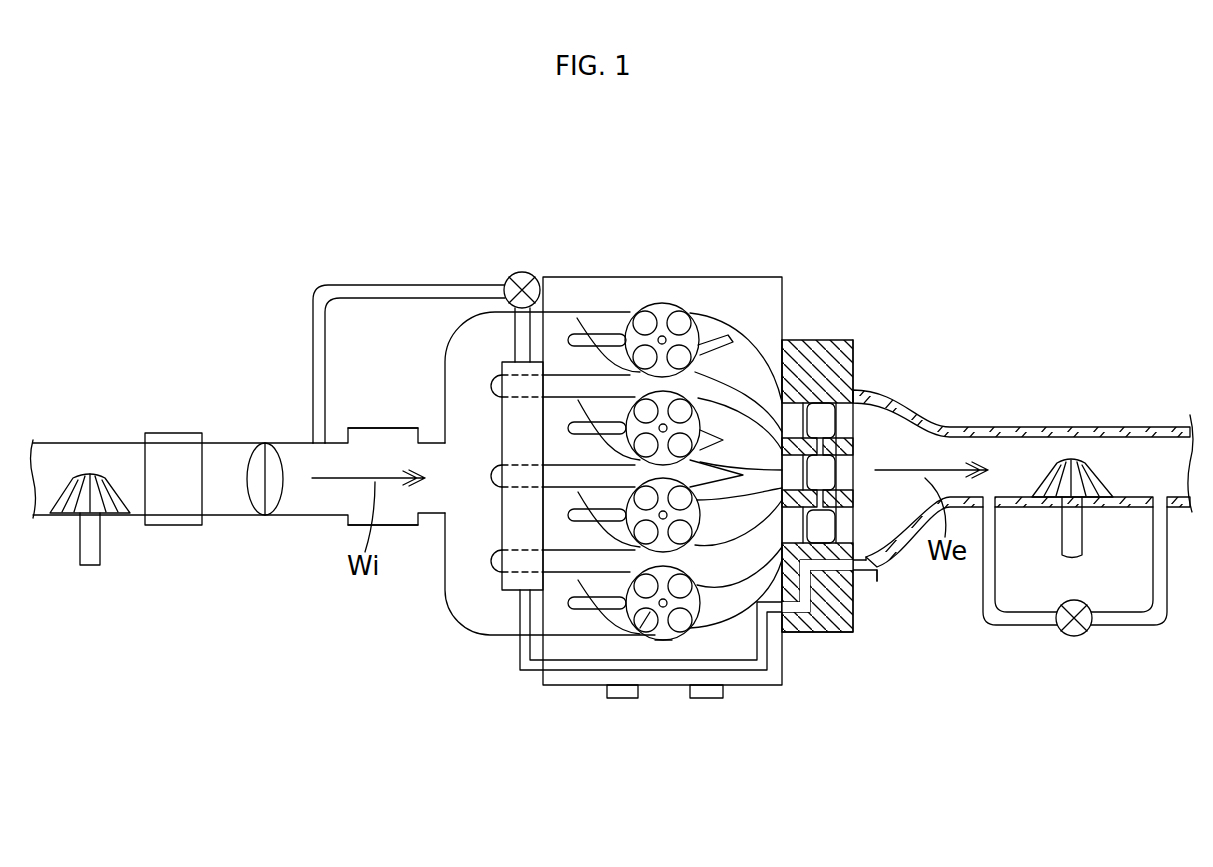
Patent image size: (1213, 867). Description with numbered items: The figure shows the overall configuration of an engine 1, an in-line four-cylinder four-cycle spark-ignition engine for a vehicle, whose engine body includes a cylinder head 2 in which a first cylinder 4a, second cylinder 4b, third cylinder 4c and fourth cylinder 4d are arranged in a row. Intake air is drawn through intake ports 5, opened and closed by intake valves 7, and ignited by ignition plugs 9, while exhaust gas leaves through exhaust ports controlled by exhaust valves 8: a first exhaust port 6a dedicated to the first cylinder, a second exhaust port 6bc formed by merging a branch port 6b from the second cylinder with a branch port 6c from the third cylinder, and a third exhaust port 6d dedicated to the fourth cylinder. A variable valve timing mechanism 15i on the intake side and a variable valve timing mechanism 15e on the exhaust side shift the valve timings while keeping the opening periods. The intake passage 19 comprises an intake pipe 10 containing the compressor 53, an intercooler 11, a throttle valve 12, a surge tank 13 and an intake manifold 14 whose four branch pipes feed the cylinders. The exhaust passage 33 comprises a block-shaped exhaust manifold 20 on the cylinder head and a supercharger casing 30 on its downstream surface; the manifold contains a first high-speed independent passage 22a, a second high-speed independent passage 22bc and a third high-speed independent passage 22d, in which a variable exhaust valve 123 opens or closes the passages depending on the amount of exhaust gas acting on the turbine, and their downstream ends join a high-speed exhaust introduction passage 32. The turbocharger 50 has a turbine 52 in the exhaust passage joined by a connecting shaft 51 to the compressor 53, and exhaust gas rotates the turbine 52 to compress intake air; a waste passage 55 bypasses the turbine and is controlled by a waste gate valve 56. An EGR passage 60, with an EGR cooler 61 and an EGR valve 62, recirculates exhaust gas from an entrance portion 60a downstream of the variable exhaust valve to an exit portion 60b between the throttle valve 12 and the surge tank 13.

The engine 1 is at (255, 292).
The cylinder head 2 is at (621, 285).
The first cylinder 4a is at (663, 640).
The second cylinder 4b is at (665, 545).
The third cylinder 4c is at (582, 335).
The fourth cylinder 4d is at (667, 308).
The intake ports 5 is at (607, 330).
The first exhaust port 6a is at (712, 605).
The branch port 6b is at (738, 540).
The second exhaust port 6bc is at (800, 525).
The branch port 6c is at (745, 400).
The third exhaust port 6d is at (735, 335).
The intake valves 7 is at (650, 612).
The exhaust valves 8 is at (667, 641).
The ignition plugs 9 is at (660, 333).
The intake pipe 10 is at (222, 442).
The intercooler 11 is at (173, 440).
The throttle valve 12 is at (287, 497).
The surge tank 13 is at (383, 433).
The intake manifold 14 is at (463, 330).
The variable valve timing mechanism on the intake side 15i is at (623, 700).
The variable valve timing mechanism on the exhaust side 15e is at (703, 700).
The intake passage 19 is at (325, 590).
The exhaust manifold 20 is at (803, 347).
The first high-speed independent passage 22a is at (847, 523).
The second high-speed independent passage 22bc is at (858, 420).
The third high-speed independent passage 22d is at (820, 420).
The variable exhaust valve 123 is at (845, 425).
The supercharger casing 30 is at (938, 424).
The high-speed exhaust introduction passage 32 is at (906, 462).
The exhaust passage 33 is at (945, 730).
The turbocharger 50 is at (72, 577).
The connecting shaft 51 is at (95, 560).
The turbine 52 is at (1100, 470).
The compressor 53 is at (77, 475).
The waste passage 55 is at (1002, 618).
The waste gate valve 56 is at (1074, 640).
The EGR passage 60 is at (350, 283).
The entrance portion 60a is at (870, 580).
The exit portion 60b is at (313, 427).
The EGR cooler 61 is at (500, 528).
The EGR valve 62 is at (520, 272).